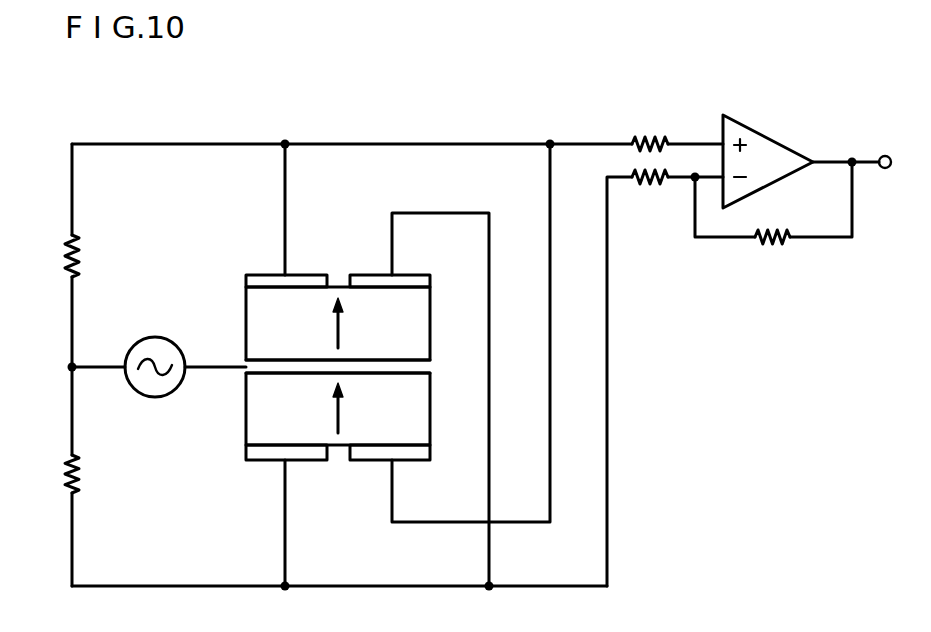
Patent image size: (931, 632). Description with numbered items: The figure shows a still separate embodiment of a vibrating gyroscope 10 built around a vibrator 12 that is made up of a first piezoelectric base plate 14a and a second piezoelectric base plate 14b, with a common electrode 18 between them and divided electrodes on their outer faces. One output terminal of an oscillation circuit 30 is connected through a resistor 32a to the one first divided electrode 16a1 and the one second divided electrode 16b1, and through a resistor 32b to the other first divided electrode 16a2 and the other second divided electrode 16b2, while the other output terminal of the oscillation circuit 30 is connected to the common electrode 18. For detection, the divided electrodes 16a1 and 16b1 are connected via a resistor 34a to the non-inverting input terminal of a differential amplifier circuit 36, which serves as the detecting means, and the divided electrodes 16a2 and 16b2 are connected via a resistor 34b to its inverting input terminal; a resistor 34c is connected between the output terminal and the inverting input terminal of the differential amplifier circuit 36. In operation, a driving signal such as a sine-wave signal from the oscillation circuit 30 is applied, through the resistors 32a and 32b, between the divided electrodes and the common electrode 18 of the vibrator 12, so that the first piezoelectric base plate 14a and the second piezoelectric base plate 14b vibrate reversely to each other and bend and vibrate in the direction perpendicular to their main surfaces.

The vibrating gyroscope 10 is at (618, 115).
The vibrator 12 is at (432, 317).
The first piezoelectric base plate 14a is at (250, 310).
The second piezoelectric base plate 14b is at (252, 408).
The first divided electrode 16a1 is at (263, 275).
The first divided electrode 16a2 is at (376, 274).
The second divided electrode 16b1 is at (373, 455).
The second divided electrode 16b2 is at (261, 457).
The common electrode 18 is at (423, 367).
The oscillation circuit 30 is at (149, 388).
The resistor 32a is at (78, 248).
The resistor 32b is at (79, 477).
The resistor 34a is at (680, 118).
The resistor 34b is at (651, 180).
The resistor 34c is at (770, 240).
The differential amplifier circuit 36 is at (775, 141).